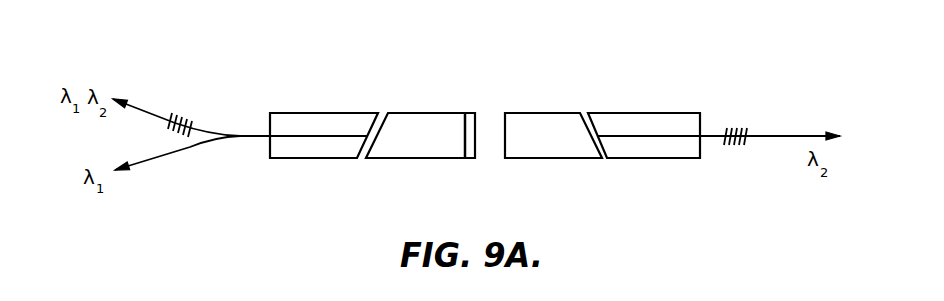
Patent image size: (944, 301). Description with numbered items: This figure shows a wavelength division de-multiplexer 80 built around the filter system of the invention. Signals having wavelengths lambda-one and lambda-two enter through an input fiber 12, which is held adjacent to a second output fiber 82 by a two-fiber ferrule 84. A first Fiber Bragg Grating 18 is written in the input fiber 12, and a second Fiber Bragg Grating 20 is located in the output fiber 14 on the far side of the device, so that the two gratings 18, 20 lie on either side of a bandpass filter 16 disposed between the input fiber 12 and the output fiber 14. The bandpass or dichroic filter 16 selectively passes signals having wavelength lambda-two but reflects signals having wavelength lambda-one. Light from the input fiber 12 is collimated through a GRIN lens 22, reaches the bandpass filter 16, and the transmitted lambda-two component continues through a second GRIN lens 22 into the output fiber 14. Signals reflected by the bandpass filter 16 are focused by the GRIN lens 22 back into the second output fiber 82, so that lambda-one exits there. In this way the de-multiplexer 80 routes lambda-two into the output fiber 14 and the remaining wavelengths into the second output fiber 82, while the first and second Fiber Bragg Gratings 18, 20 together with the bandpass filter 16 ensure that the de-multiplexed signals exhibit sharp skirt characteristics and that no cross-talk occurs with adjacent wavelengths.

The wavelength division de-multiplexer 80 is at (626, 44).
The input fiber 12 is at (117, 100).
The second output fiber 82 is at (155, 156).
The first Fiber Bragg Grating 18 is at (183, 115).
The two-fiber ferrule 84 is at (297, 113).
The GRIN lens 22 is at (393, 153).
The bandpass filter 16 is at (470, 111).
The output fiber 14 is at (791, 134).
The second Fiber Bragg Grating 20 is at (731, 127).